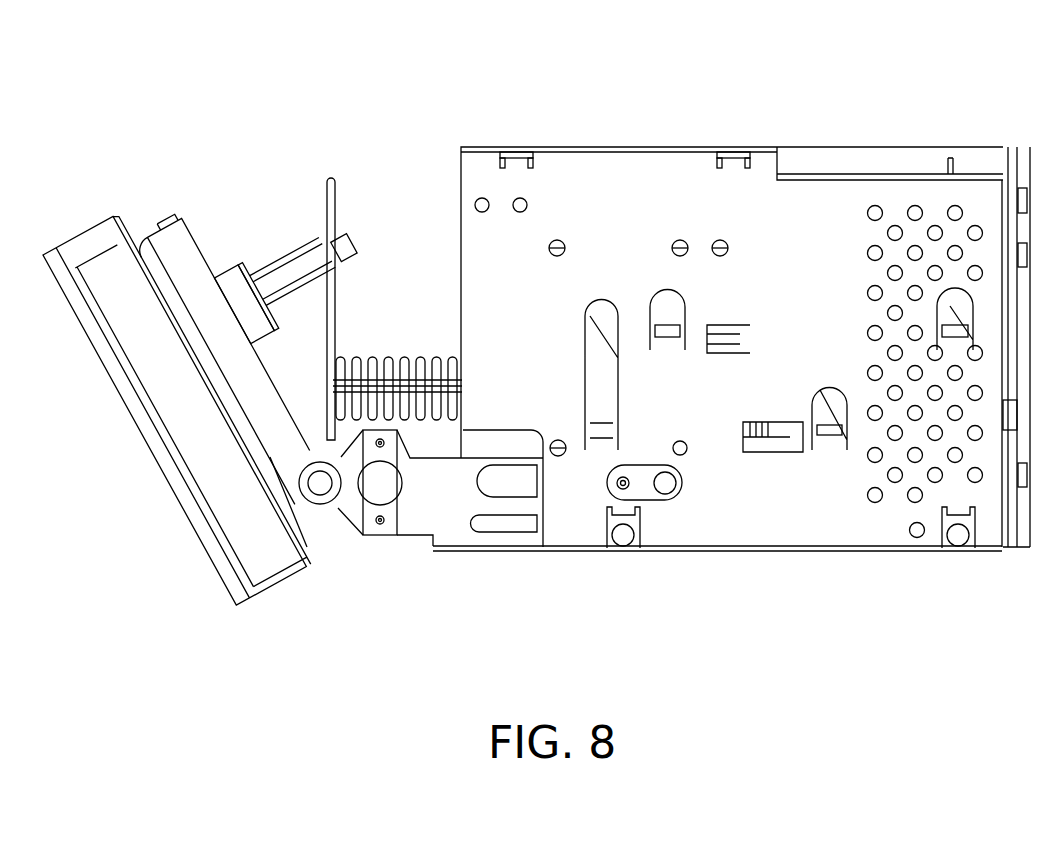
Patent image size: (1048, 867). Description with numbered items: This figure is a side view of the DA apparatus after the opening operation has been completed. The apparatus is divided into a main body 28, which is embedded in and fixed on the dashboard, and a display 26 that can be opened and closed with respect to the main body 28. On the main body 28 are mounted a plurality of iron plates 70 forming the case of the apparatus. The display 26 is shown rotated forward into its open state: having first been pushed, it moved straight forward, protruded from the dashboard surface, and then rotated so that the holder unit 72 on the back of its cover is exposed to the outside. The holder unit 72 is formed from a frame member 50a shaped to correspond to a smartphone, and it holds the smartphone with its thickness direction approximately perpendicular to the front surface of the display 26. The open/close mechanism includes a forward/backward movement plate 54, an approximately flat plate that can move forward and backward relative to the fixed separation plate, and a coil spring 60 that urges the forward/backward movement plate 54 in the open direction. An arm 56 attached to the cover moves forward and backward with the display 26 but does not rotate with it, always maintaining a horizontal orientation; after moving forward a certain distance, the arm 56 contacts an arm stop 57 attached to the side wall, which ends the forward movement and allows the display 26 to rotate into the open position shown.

The display 26 is at (173, 477).
The main body 28 is at (634, 147).
The frame member 50a is at (265, 283).
The holder unit 72 is at (192, 237).
The forward/backward movement plate 54 is at (336, 182).
The arm 56 is at (452, 493).
The arm stop 57 is at (642, 493).
The coil spring 60 is at (383, 353).
The iron plates 70 is at (768, 510).